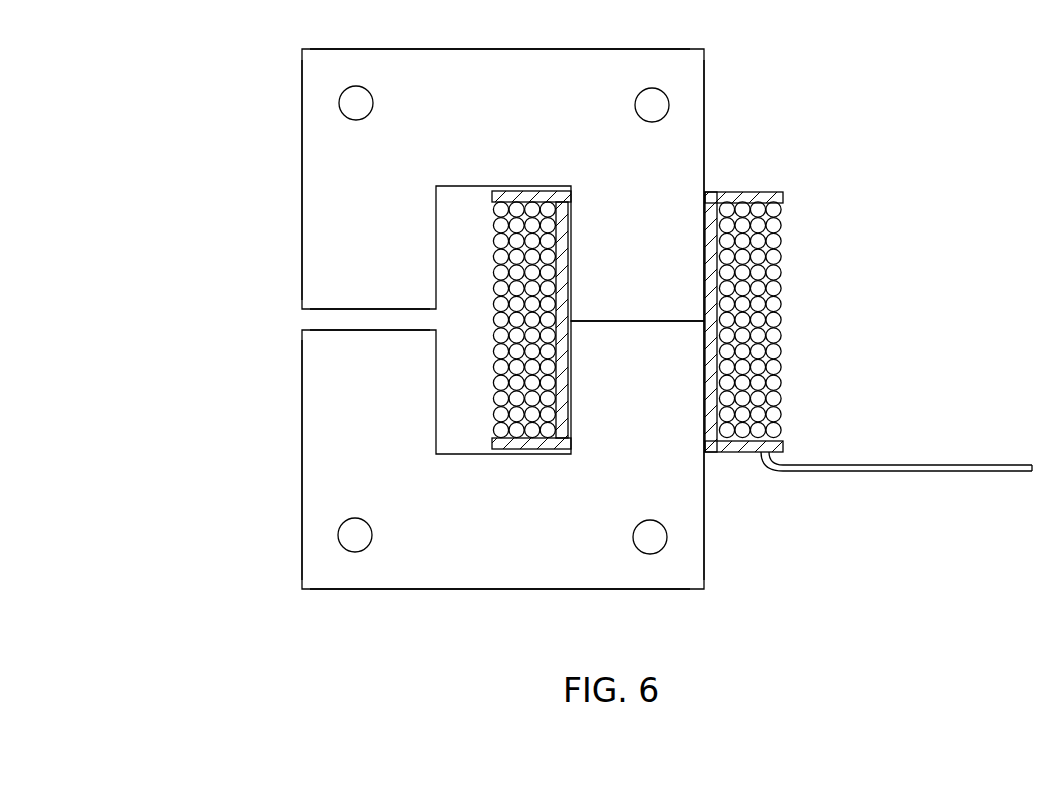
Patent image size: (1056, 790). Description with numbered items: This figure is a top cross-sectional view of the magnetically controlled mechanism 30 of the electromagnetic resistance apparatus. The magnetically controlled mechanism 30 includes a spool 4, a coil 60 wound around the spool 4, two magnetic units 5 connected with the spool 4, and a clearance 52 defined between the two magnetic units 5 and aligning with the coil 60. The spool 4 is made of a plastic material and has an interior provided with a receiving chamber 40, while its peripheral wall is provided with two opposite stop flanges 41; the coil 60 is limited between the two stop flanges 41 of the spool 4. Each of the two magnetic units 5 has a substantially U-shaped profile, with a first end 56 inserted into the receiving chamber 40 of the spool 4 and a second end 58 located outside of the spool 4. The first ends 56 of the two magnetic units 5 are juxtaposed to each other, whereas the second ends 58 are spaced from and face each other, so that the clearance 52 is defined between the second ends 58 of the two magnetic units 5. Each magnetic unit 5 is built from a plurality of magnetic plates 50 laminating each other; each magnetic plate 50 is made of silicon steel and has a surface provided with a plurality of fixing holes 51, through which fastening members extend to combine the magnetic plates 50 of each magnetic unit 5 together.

The spool 4 is at (765, 381).
The magnetic unit 5 is at (250, 244).
The magnetically controlled mechanism 30 is at (757, 587).
The receiving chamber 40 is at (705, 410).
The stop flange 41 is at (778, 200).
The magnetic plate 50 is at (507, 88).
The fixing hole 51 is at (353, 101).
The clearance 52 is at (298, 318).
The first end 56 is at (628, 263).
The second end 58 is at (343, 210).
The coil 60 is at (773, 243).